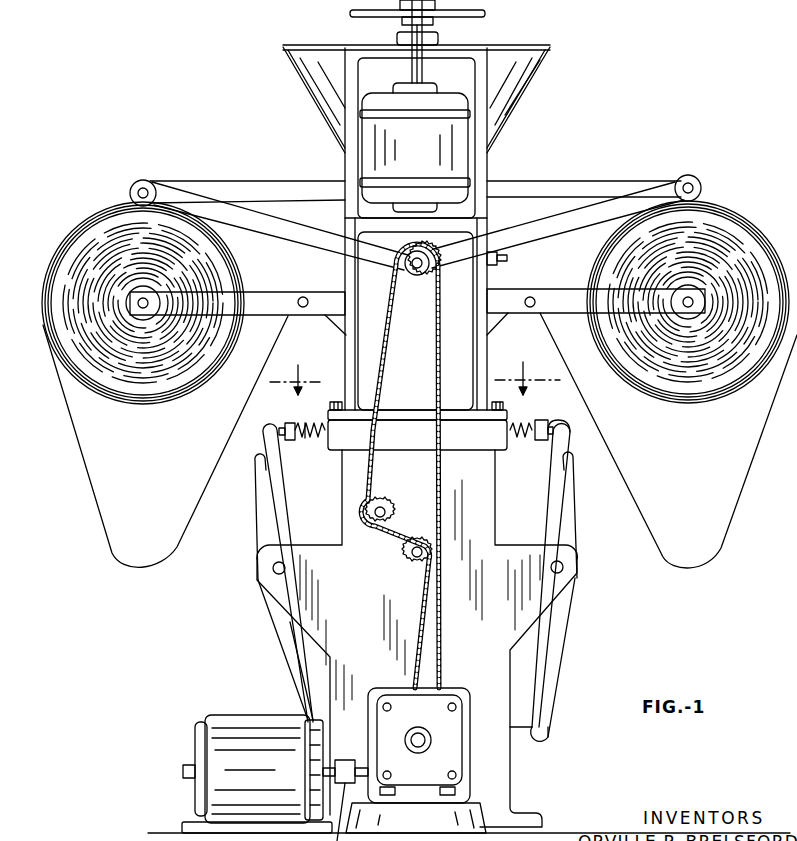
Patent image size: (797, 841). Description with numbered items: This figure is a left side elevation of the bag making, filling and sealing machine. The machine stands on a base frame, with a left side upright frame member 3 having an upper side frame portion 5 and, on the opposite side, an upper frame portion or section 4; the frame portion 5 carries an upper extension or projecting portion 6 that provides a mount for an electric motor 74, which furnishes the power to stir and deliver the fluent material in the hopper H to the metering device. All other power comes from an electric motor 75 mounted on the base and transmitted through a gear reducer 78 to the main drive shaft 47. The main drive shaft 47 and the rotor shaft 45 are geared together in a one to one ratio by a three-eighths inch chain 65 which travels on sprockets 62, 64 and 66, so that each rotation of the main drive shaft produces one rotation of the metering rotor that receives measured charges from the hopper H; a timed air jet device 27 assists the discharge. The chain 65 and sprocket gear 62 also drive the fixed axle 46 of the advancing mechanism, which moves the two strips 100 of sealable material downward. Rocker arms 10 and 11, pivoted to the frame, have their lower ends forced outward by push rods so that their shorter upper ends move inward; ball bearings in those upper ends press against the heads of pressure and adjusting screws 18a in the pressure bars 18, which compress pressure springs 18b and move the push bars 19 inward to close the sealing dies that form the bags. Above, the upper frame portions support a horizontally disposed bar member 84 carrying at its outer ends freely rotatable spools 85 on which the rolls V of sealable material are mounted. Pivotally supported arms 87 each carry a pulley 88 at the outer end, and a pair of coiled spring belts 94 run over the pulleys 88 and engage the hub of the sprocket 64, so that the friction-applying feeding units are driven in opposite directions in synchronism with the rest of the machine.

The hopper H is at (520, 70).
The upper extension or projecting portion 6 is at (478, 172).
The upper side frame portion 5 is at (418, 349).
The electric motor 74 is at (427, 143).
The pivotally supported arms 87 is at (270, 187).
The pulley 88 is at (143, 180).
The coiled spring belts 94 is at (293, 231).
The horizontally disposed bar member 84 is at (267, 297).
The spools 85 is at (145, 287).
The rolls of sealable material V is at (118, 380).
The strips of sealable material 100 is at (207, 490).
The upper frame portion or section 4 is at (415, 377).
The push bars 19 is at (323, 443).
The pressure bars 18 is at (290, 442).
The pressure and adjusting screws 18a is at (283, 423).
The pressure springs 18b is at (305, 423).
The rocker arm 11 is at (265, 511).
The rocker arm 10 is at (558, 621).
The left side upright frame member 3 is at (361, 627).
The chain 65 is at (374, 472).
The axle 46 is at (431, 546).
The rotor shaft 45 is at (480, 223).
The sprocket 64 is at (411, 279).
The air jet device 27 is at (498, 263).
The sprocket 66 is at (390, 506).
The sprocket gear 62 is at (406, 562).
The gear reducer 78 is at (457, 693).
The main drive shaft 47 is at (423, 747).
The electric motor 75 is at (223, 725).